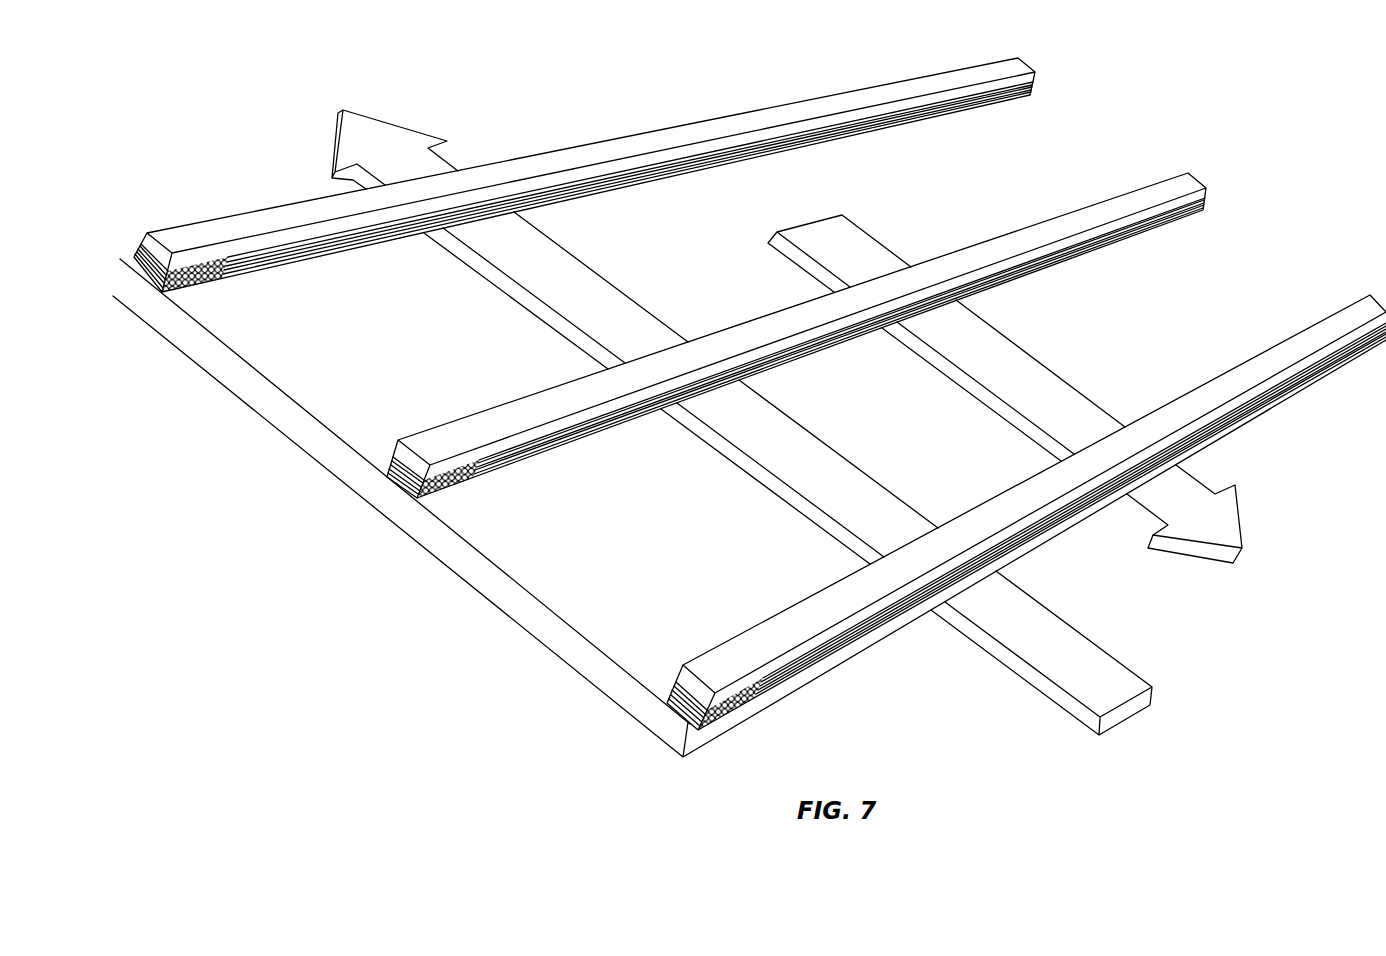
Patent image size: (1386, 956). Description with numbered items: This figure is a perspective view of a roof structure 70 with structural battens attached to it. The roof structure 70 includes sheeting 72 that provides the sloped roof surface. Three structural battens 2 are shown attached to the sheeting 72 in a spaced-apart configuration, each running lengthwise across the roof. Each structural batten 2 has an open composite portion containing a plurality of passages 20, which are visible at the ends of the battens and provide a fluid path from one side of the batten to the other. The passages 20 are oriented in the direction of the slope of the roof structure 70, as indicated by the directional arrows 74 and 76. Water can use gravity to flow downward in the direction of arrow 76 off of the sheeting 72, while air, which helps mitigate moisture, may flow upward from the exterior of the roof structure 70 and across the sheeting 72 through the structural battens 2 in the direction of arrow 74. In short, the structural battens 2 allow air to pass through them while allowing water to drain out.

The structural batten 2 is at (782, 104).
The passages 20 is at (228, 286).
The roof structure 70 is at (749, 433).
The sheeting 72 is at (508, 618).
The directional arrow 74 is at (609, 283).
The directional arrow 76 is at (1070, 385).